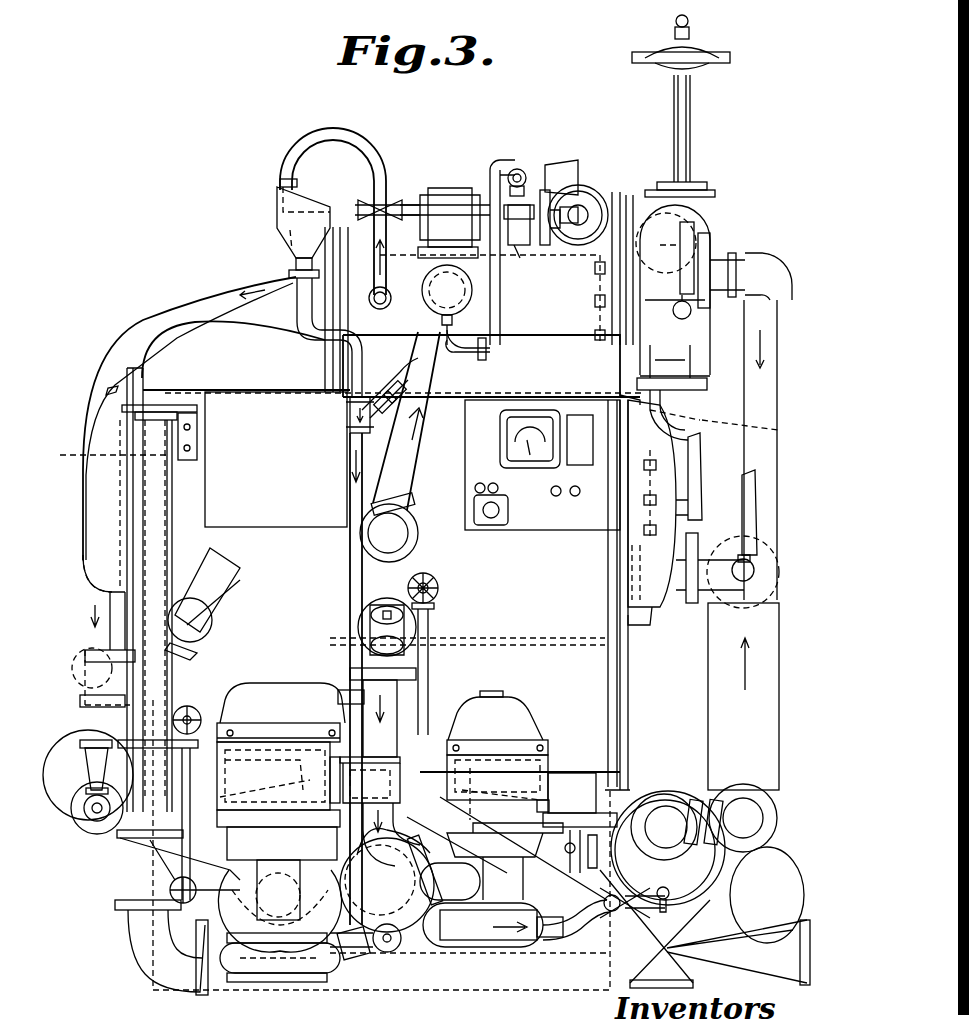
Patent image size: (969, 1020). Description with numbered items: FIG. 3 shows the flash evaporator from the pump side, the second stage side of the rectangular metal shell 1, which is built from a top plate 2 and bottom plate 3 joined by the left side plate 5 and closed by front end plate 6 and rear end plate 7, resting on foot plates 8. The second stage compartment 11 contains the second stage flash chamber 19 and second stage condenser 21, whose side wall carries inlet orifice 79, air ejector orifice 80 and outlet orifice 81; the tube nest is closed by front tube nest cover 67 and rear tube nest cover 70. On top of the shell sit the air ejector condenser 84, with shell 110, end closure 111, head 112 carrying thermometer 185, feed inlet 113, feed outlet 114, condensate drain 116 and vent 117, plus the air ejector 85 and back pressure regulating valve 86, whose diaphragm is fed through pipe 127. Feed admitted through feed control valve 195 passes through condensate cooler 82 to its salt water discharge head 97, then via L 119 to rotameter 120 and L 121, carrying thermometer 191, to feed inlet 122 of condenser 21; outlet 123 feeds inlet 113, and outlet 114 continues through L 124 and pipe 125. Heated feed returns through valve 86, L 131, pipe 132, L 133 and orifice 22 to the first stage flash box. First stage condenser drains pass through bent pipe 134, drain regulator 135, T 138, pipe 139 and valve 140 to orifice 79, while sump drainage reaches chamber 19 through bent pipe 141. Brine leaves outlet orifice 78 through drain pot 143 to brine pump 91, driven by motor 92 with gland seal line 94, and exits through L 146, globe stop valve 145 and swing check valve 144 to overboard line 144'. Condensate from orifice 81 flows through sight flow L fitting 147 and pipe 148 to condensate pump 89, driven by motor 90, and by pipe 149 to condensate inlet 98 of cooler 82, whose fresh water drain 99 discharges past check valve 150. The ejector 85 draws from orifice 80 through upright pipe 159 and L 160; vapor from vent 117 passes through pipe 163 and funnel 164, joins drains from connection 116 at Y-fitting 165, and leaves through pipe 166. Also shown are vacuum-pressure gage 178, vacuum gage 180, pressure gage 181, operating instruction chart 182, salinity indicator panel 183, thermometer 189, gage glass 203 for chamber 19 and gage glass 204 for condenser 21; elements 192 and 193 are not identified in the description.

The metal shell 1 is at (273, 398).
The top plate 2 is at (205, 388).
The bottom plate 3 is at (565, 775).
The side plate 5 is at (620, 638).
The end plate 6 is at (604, 683).
The end plate 7 is at (178, 535).
The foot plates 8 is at (186, 800).
The second stage compartment 11 is at (78, 455).
The second stage flash chamber 19 is at (590, 675).
The second stage condenser 21 is at (180, 498).
The orifice 22 is at (196, 705).
The front tube nest cover 67 is at (702, 488).
The rear tube nest cover 70 is at (100, 425).
The bottom outlet orifice 78 is at (275, 760).
The inlet orifice 79 is at (235, 582).
The air ejector orifice 80 is at (410, 520).
The outlet orifice 81 is at (404, 630).
The condensate cooler 82 is at (700, 870).
The air ejector condenser 84 is at (562, 352).
The air ejector 85 is at (476, 196).
The back pressure regulating valve 86 is at (706, 218).
The condensate pump 89 is at (487, 930).
The motor 90 is at (530, 718).
The brine pump 91 is at (275, 960).
The motor 92 is at (268, 685).
The gland seal line 94 is at (375, 880).
The salt water discharge head 97 is at (700, 895).
The condensate inlet 98 is at (595, 925).
The fresh water drain 99 is at (572, 795).
The cylindrical metal shell 110 is at (555, 390).
The end closure 111 is at (296, 332).
The head 112 is at (685, 332).
The feed inlet 113 is at (688, 362).
The feed outlet 114 is at (725, 272).
The condensate drain 116 is at (395, 368).
The vent 117 is at (420, 303).
The L 119 is at (672, 813).
The rotameter 120 is at (768, 730).
The L 121 is at (738, 595).
The feed inlet 122 is at (676, 600).
The outlet 123 is at (668, 415).
The L 124 is at (772, 272).
The pipe 125 is at (770, 400).
The pipe 127 is at (688, 21).
The L 131 is at (672, 205).
The pipe 132 is at (142, 330).
The L 133 is at (78, 700).
The bent pipe 134 is at (110, 637).
The drain regulator 135 is at (90, 738).
The T 138 is at (88, 815).
The pipe 139 is at (72, 668).
The valve 140 is at (215, 618).
The bent pipe 141 is at (420, 840).
The drain pot 143 is at (265, 718).
The swing check valve 144 is at (144, 825).
The brine overboard discharge line 144' is at (215, 450).
The globe stop valve 145 is at (168, 887).
The L 146 is at (145, 950).
The sight flow L fitting 147 is at (405, 660).
The pipe 148 is at (398, 688).
The pipe 149 is at (557, 930).
The check valve 150 is at (655, 870).
The upright pipe 159 is at (420, 475).
The L 160 is at (385, 527).
The pipe 163 is at (374, 160).
The funnel 164 is at (288, 232).
The Y-fitting 165 is at (348, 420).
The pipe 166 is at (350, 575).
The vacuum-pressure gage 178 is at (596, 325).
The vacuum gage 180 is at (792, 435).
The pressure gage 181 is at (470, 290).
The operating instruction chart 182 is at (270, 527).
The salinity indicator panel 183 is at (452, 365).
The thermometer 185 is at (668, 265).
The thermometer 189 is at (628, 597).
The thermometer 191 is at (757, 505).
The bar 192 is at (702, 462).
The tank 193 is at (640, 540).
The feed control valve 195 is at (672, 950).
The gage glass 203 is at (250, 843).
The gage glass 204 is at (440, 600).